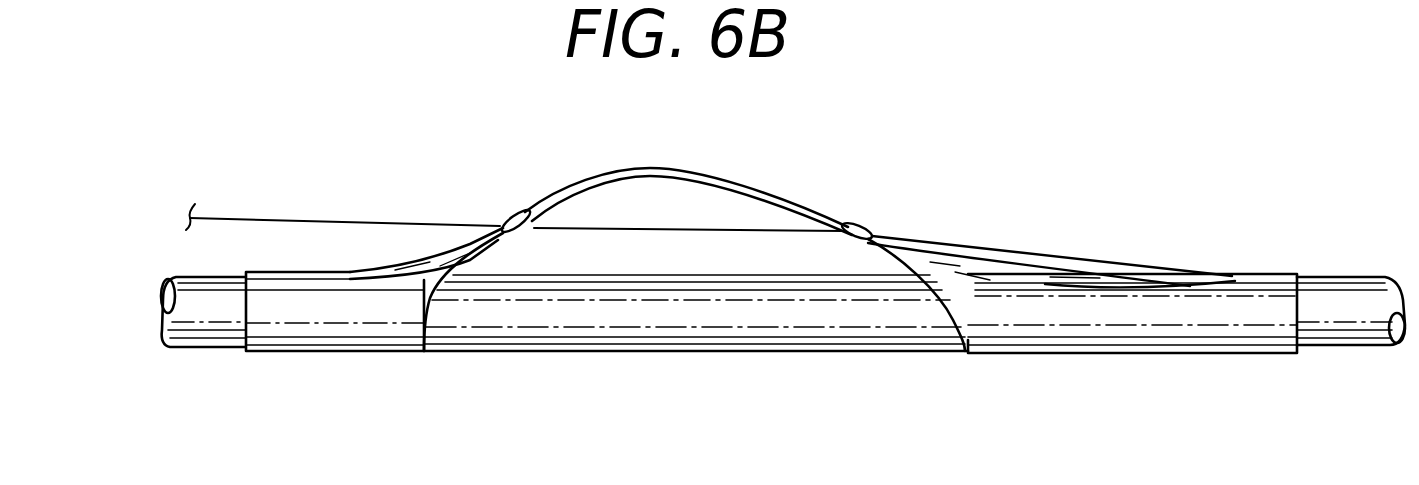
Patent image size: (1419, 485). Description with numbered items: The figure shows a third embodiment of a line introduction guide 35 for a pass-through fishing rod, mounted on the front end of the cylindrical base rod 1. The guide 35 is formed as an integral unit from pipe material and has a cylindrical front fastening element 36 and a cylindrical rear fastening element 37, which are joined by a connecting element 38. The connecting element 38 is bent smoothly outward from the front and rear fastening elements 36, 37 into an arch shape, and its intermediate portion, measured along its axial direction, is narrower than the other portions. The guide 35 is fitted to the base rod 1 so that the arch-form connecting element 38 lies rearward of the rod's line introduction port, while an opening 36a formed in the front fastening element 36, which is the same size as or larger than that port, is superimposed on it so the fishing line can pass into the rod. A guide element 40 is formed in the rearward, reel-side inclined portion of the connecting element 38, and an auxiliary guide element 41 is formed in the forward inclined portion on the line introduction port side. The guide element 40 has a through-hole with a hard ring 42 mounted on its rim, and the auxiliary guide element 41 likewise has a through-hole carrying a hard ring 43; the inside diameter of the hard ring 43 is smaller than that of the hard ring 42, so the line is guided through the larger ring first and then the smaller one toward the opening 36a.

The base rod 1 is at (704, 328).
The line introduction guide 35 is at (710, 171).
The front fastening element 36 is at (1030, 340).
The opening 36a is at (1225, 277).
The rear fastening element 37 is at (318, 335).
The connecting element 38 is at (765, 195).
The guide element 40 is at (522, 213).
The auxiliary guide element 41 is at (876, 217).
The hard ring 42 is at (478, 226).
The hard ring 43 is at (842, 222).